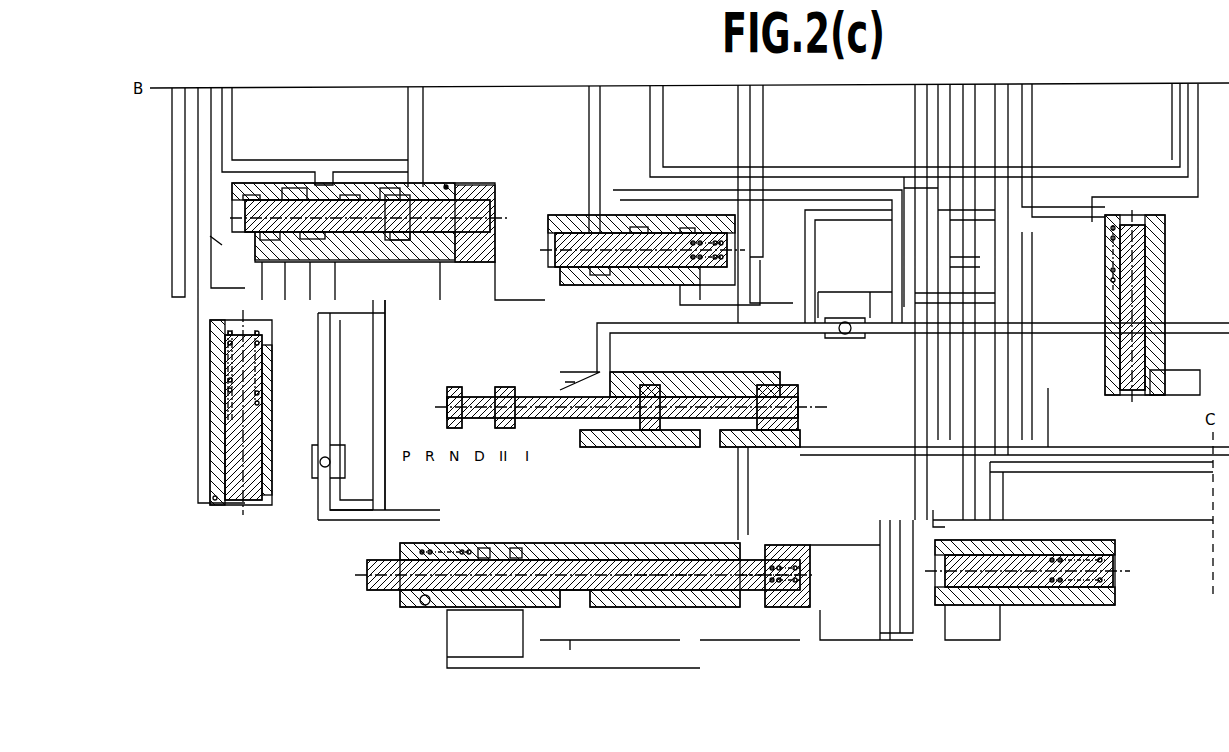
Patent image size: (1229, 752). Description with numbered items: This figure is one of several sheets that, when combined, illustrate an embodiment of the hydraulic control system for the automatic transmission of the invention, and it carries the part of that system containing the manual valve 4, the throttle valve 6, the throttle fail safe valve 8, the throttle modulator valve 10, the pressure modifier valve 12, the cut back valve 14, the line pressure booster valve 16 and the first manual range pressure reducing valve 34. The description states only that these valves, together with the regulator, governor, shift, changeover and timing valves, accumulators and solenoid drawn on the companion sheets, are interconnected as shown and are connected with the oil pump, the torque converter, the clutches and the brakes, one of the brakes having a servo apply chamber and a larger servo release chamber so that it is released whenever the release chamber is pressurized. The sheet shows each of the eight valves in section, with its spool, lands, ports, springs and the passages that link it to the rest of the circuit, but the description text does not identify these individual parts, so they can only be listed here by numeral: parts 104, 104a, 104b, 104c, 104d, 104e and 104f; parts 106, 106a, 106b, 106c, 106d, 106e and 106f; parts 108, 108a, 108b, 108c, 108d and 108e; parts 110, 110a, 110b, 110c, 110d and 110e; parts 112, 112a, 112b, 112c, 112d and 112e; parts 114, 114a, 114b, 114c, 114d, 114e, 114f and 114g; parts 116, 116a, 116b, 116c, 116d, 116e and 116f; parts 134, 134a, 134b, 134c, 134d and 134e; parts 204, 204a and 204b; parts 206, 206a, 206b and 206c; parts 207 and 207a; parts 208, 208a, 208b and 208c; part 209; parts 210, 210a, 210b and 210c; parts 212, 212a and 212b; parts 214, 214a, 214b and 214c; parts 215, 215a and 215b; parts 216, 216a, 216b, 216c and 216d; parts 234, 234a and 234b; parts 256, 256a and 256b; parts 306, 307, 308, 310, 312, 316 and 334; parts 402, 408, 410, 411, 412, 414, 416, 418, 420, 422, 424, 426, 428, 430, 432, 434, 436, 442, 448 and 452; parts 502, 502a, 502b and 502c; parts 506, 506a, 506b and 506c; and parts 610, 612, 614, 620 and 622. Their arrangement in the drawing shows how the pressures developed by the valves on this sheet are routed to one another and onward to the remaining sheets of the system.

The manual valve 4 is at (680, 365).
The throttle valve 6 is at (818, 552).
The throttle fail safe valve 8 is at (618, 532).
The throttle modulator valve 10 is at (1073, 517).
The pressure modifier valve 12 is at (241, 523).
The cut back valve 14 is at (492, 283).
The line pressure booster valve 16 is at (745, 236).
The first manual range pressure reducing valve 34 is at (1118, 410).
The spool 104 is at (718, 372).
The land 104a is at (570, 443).
The land 104b is at (606, 443).
The land 104c is at (690, 433).
The land 104d is at (738, 443).
The land 104e is at (800, 388).
The land 104f is at (782, 441).
The spool 106 is at (660, 546).
The land 106a is at (630, 610).
The land 106b is at (705, 663).
The land 106c is at (700, 643).
The land 106d is at (745, 610).
The land 106e is at (790, 610).
The land 106f is at (805, 593).
The spool 108 is at (400, 551).
The land 108a is at (445, 608).
The land 108b is at (490, 613).
The land 108c is at (507, 615).
The land 108d is at (545, 615).
The land 108e is at (590, 615).
The spool 110 is at (1080, 545).
The land 110a is at (955, 545).
The land 110b is at (980, 525).
The land 110c is at (995, 545).
The land 110d is at (1035, 545).
The land 110e is at (1115, 555).
The spool 112 is at (268, 375).
The land 112a is at (268, 353).
The land 112b is at (268, 403).
The land 112c is at (268, 423).
The land 112d is at (272, 473).
The land 112e is at (265, 508).
The spool 114 is at (374, 190).
The land 114a is at (245, 195).
The land 114b is at (292, 190).
The land 114c is at (325, 195).
The land 114d is at (347, 190).
The land 114e is at (392, 262).
The land 114f is at (410, 258).
The land 114g is at (490, 248).
The spool 116 is at (555, 273).
The land 116a is at (575, 275).
The land 116b is at (605, 275).
The land 116c is at (638, 275).
The land 116d is at (648, 231).
The land 116e is at (690, 231).
The land 116f is at (732, 235).
The spool 134 is at (1150, 265).
The land 134a is at (1150, 223).
The land 134b is at (1152, 303).
The land 134c is at (1150, 323).
The land 134d is at (1150, 388).
The land 134e is at (1145, 398).
The port 204 is at (520, 395).
The port 204a is at (630, 378).
The port 204b is at (770, 381).
The port 206 is at (625, 586).
The port 206a is at (680, 546).
The port 206b is at (738, 520).
The port 206c is at (785, 551).
The port 207 is at (380, 593).
The port 207a is at (585, 546).
The port 208 is at (540, 546).
The port 208a is at (490, 546).
The port 208b is at (548, 546).
The port 208c is at (600, 546).
The ball 209 is at (415, 610).
The port 210 is at (1075, 598).
The port 210a is at (955, 613).
The port 210b is at (985, 623).
The port 210c is at (1045, 603).
The spring 212 is at (225, 331).
The spring 212a is at (265, 388).
The port 212b is at (262, 511).
The port 214 is at (318, 262).
The port 214a is at (250, 262).
The port 214b is at (288, 262).
The port 214c is at (348, 265).
The plug 215 is at (400, 190).
The port 215a is at (425, 263).
The port 215b is at (475, 265).
The port 216 is at (690, 283).
The port 216a is at (572, 233).
The port 216b is at (628, 233).
The port 216c is at (712, 233).
The port 216d is at (553, 235).
The spring 234 is at (1110, 241).
The port 234a is at (1108, 303).
The port 234b is at (1115, 388).
The plug 256 is at (480, 190).
The port 256a is at (432, 263).
The port 256b is at (482, 261).
The spring 306 is at (805, 571).
The spring 307 is at (650, 551).
The spring 308 is at (452, 543).
The spring 310 is at (1115, 583).
The spring 312 is at (212, 386).
The spring 316 is at (735, 251).
The spring 334 is at (1105, 258).
The oil passage 402 is at (385, 393).
The oil passage 408 is at (812, 241).
The oil passage 410 is at (233, 123).
The oil passage 411 is at (226, 241).
The oil passage 412 is at (664, 121).
The oil passage 414 is at (764, 121).
The oil passage 416 is at (1048, 388).
The oil passage 418 is at (882, 628).
The oil passage 420 is at (887, 571).
The oil passage 422 is at (352, 520).
The oil passage 424 is at (1195, 578).
The oil passage 426 is at (270, 495).
The oil passage 428 is at (500, 288).
The oil passage 430 is at (425, 112).
The oil passage 432 is at (640, 190).
The oil passage 434 is at (588, 184).
The oil passage 436 is at (877, 290).
The oil passage 442 is at (735, 144).
The oil passage 448 is at (990, 343).
The oil passage 452 is at (1010, 138).
The check valve 502 is at (833, 343).
The port 502a is at (818, 338).
The port 502b is at (853, 343).
The port 502c is at (838, 318).
The check valve 506 is at (345, 461).
The port 506a is at (333, 479).
The port 506b is at (332, 443).
The port 506c is at (310, 458).
The orifice 610 is at (780, 540).
The orifice 612 is at (1115, 545).
The orifice 614 is at (446, 183).
The orifice 620 is at (1150, 403).
The orifice 622 is at (215, 511).